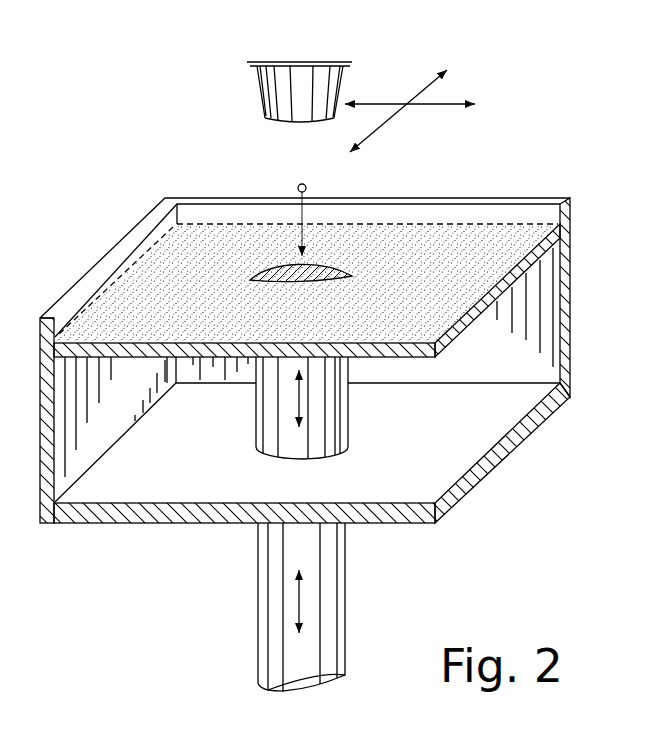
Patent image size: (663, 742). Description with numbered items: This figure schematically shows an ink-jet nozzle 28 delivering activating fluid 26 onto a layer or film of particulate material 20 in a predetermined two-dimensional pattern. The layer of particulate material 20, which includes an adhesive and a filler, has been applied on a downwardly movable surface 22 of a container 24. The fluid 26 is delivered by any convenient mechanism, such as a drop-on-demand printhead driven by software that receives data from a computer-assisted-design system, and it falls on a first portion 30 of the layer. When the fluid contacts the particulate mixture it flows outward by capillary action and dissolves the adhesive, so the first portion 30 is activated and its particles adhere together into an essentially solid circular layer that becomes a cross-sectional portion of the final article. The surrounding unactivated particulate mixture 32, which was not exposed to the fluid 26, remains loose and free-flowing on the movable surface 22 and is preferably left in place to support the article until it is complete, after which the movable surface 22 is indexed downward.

The layer of particulate material 20 is at (450, 238).
The downwardly movable surface 22 is at (478, 320).
The container 24 is at (570, 260).
The activating fluid 26 is at (306, 187).
The ink-jet nozzle 28 is at (340, 83).
The first portion of the particulate mixture 30 is at (352, 272).
The unactivated particulate mixture 32 is at (238, 260).